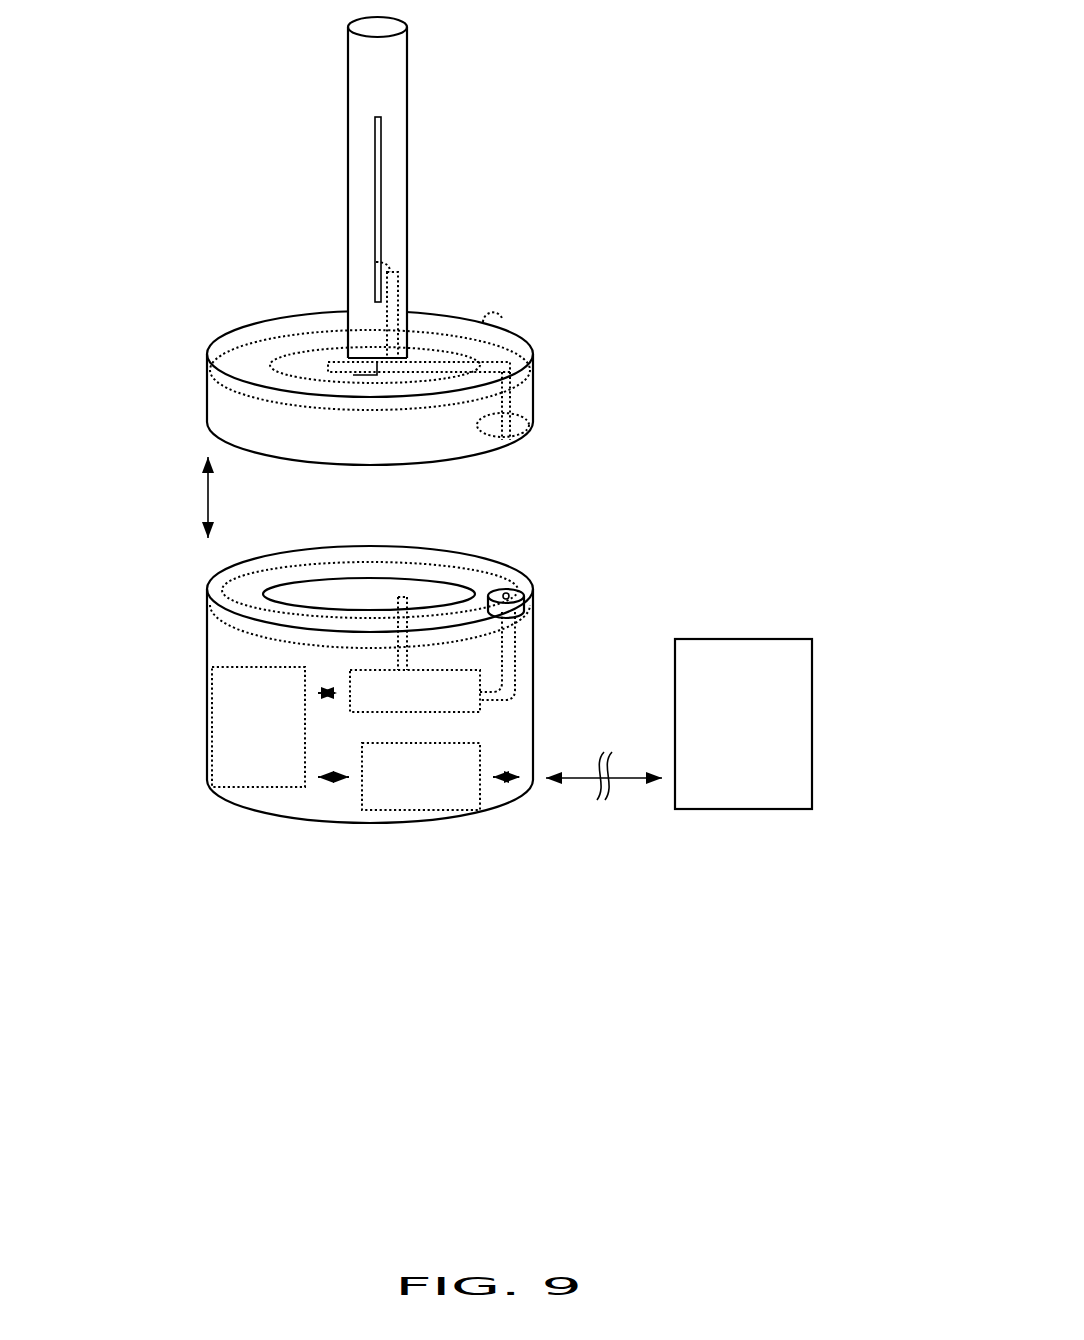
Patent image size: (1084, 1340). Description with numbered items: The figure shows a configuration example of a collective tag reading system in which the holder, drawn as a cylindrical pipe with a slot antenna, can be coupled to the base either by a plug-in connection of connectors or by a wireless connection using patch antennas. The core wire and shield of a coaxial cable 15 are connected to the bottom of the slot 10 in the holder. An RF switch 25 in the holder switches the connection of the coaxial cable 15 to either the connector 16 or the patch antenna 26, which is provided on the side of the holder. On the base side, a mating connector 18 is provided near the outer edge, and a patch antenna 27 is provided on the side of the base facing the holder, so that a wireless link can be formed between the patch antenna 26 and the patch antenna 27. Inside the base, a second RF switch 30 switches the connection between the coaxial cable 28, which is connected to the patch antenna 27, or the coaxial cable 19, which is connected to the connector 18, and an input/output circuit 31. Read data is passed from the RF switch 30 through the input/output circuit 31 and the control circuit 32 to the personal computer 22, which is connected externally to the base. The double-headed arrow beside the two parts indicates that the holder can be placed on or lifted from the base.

The slot 10 is at (378, 177).
The coaxial cable 15 is at (502, 202).
The coaxial connector 16 is at (503, 453).
The connector 18 is at (518, 586).
The coaxial cable 19 is at (535, 641).
The personal computer 22 is at (746, 638).
The RF switch 25 is at (432, 355).
The patch antenna 26 is at (408, 378).
The patch antenna 27 is at (373, 578).
The coaxial cable 28 is at (502, 202).
The RF switch 30 is at (418, 714).
The input/output circuit 31 is at (212, 728).
The control circuit 32 is at (421, 810).